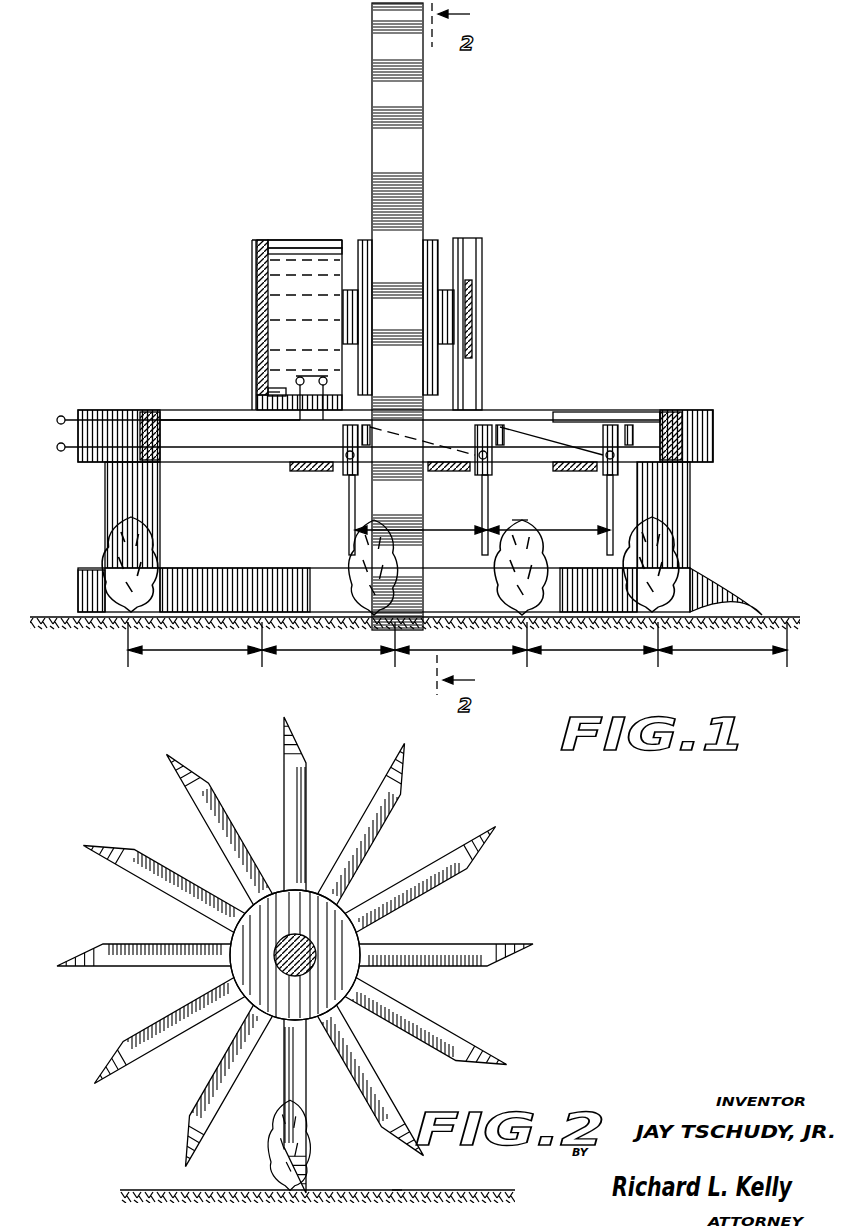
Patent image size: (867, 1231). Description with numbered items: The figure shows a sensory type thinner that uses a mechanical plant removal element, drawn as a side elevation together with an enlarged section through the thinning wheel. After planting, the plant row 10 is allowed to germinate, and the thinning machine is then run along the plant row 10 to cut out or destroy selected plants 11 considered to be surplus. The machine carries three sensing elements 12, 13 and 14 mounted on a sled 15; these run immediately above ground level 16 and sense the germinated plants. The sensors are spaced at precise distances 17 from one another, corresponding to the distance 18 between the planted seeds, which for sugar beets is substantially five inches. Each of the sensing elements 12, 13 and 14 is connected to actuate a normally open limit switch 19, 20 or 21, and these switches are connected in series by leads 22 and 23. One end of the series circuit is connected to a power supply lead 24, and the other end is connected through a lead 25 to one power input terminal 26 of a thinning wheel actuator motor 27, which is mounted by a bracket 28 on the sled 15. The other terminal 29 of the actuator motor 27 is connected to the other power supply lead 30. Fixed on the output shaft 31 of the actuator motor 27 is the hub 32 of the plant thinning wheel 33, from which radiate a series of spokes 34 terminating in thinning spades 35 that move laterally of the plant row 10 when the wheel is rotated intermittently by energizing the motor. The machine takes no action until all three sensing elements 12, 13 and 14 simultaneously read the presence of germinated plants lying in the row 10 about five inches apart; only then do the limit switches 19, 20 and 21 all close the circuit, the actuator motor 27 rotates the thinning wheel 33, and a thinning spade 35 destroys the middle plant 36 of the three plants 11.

In FIG. 1, the plant row 10 is at (792, 617).
In FIG. 2, the plant row 10 is at (445, 1190).
In FIG. 1, the plants 11 is at (104, 546).
In FIG. 2, the plants 11 is at (313, 1169).
In FIG. 1, the sensing element 12 is at (349, 510).
In FIG. 1, the sensing element 13 is at (484, 505).
In FIG. 1, the sensing element 14 is at (607, 509).
In FIG. 1, the sled 15 is at (713, 435).
In FIG. 1, the ground level 16 is at (759, 615).
In FIG. 2, the ground level 16 is at (394, 1190).
In FIG. 1, the distance between sensors 17 is at (434, 528).
In FIG. 1, the distance between planted seeds 18 is at (190, 658).
In FIG. 1, the limit switch 19 is at (344, 473).
In FIG. 1, the limit switch 20 is at (492, 473).
In FIG. 1, the limit switch 21 is at (625, 490).
In FIG. 1, the lead 22 is at (431, 448).
In FIG. 1, the lead 23 is at (540, 425).
In FIG. 1, the power supply lead 24 is at (61, 450).
In FIG. 1, the lead 25 is at (600, 421).
In FIG. 1, the power input terminal 26 is at (323, 376).
In FIG. 1, the thinning wheel actuator motor 27 is at (319, 241).
In FIG. 1, the bracket 28 is at (252, 290).
In FIG. 1, the terminal 29 is at (284, 384).
In FIG. 1, the power supply lead 30 is at (60, 417).
In FIG. 1, the output shaft 31 is at (343, 293).
In FIG. 2, the output shaft 31 is at (275, 967).
In FIG. 1, the hub 32 is at (460, 238).
In FIG. 2, the hub 32 is at (233, 964).
In FIG. 1, the plant thinning wheel 33 is at (393, 316).
In FIG. 2, the plant thinning wheel 33 is at (295, 955).
In FIG. 1, the spokes 34 is at (372, 154).
In FIG. 2, the spokes 34 is at (336, 828).
In FIG. 1, the thinning spades 35 is at (372, 20).
In FIG. 2, the thinning spades 35 is at (296, 737).
In FIG. 1, the middle plant 36 is at (520, 520).